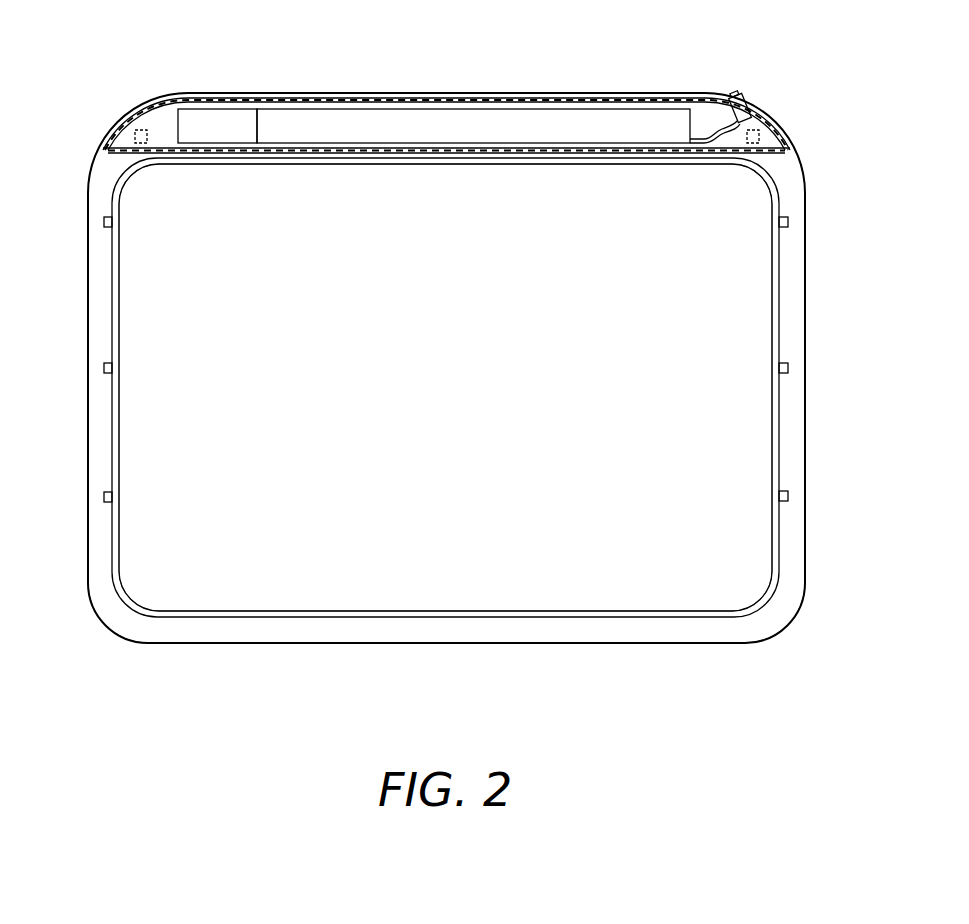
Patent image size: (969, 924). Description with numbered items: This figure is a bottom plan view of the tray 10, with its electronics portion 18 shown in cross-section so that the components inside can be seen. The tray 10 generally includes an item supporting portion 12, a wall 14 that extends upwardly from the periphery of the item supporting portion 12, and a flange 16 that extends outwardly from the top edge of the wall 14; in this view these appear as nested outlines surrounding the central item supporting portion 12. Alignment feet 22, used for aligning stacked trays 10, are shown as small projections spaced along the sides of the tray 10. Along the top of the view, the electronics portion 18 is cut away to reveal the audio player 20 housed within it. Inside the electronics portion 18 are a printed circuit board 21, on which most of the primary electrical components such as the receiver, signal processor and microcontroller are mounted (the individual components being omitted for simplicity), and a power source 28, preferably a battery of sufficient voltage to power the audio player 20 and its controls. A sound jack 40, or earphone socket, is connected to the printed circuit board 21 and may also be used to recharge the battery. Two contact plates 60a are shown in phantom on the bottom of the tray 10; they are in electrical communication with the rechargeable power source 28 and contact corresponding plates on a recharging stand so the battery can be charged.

The tray 10 is at (714, 661).
The item supporting portion 12 is at (582, 380).
The wall 14 is at (782, 405).
The flange 16 is at (800, 308).
The electronics portion 18 is at (543, 154).
The audio player 20 is at (140, 91).
The printed circuit board 21 is at (466, 141).
The alignment feet 22 is at (790, 222).
The power source 28 is at (242, 141).
The sound jack 40 is at (752, 106).
The contact plates 60a is at (133, 134).